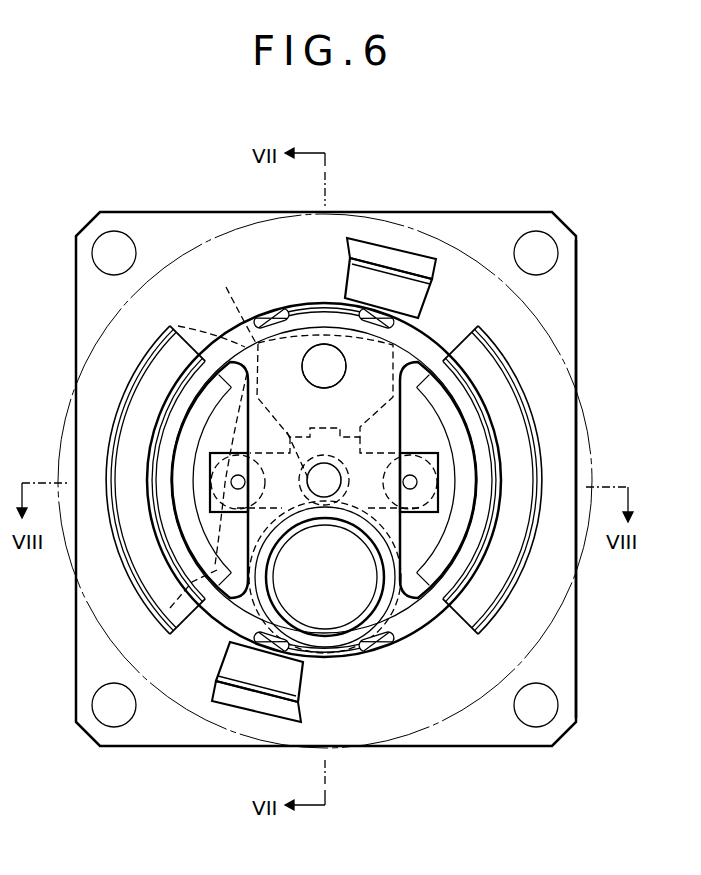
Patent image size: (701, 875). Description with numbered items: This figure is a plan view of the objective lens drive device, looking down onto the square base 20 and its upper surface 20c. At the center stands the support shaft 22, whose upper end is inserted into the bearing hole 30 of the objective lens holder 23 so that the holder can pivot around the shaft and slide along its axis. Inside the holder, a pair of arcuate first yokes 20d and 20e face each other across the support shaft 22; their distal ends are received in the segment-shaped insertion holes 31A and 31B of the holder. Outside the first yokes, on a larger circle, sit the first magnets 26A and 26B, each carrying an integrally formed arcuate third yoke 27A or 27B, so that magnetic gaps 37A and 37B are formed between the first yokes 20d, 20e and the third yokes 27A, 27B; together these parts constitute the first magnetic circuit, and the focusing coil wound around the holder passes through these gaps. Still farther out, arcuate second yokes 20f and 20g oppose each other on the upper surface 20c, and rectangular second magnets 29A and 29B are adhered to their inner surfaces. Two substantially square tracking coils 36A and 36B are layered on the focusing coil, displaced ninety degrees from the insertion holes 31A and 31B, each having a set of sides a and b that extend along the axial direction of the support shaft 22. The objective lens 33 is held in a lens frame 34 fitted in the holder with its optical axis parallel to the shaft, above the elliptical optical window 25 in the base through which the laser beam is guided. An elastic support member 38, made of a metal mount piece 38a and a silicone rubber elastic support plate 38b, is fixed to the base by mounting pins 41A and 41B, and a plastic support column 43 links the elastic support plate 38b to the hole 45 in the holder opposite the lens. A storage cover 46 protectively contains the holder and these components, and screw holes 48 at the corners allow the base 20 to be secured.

The base 20 is at (491, 188).
The upper surface 20c is at (562, 313).
The first yoke 20d is at (446, 408).
The first yoke 20e is at (167, 400).
The second yoke 20f is at (400, 250).
The second yoke 20g is at (240, 705).
The support shaft 22 is at (343, 477).
The objective lens holder 23 is at (431, 344).
The optical window 25 is at (394, 630).
The first magnet 26A is at (532, 424).
The first magnet 26B is at (197, 413).
The third yoke 27A is at (520, 458).
The third yoke 27B is at (130, 443).
The second magnet 29A is at (416, 292).
The second magnet 29B is at (232, 670).
The bearing hole 30 is at (324, 466).
The insertion hole 31A is at (455, 563).
The insertion hole 31B is at (186, 543).
The objective lens 33 is at (337, 613).
The lens frame 34 is at (323, 631).
The tracking coil 36A is at (298, 312).
The tracking coil 36B is at (362, 657).
The magnetic gap 37A is at (486, 498).
The magnetic gap 37B is at (157, 492).
The elastic support member 38 is at (245, 359).
The mount piece 38a is at (191, 323).
The elastic support plate 38b is at (223, 305).
The mounting pin 41A is at (478, 616).
The mounting pin 41B is at (193, 586).
The support column 43 is at (322, 350).
The hole 45 is at (345, 372).
The storage cover 46 is at (463, 714).
The screw holes 48 is at (104, 717).
The side a is at (220, 630).
The side b is at (262, 313).